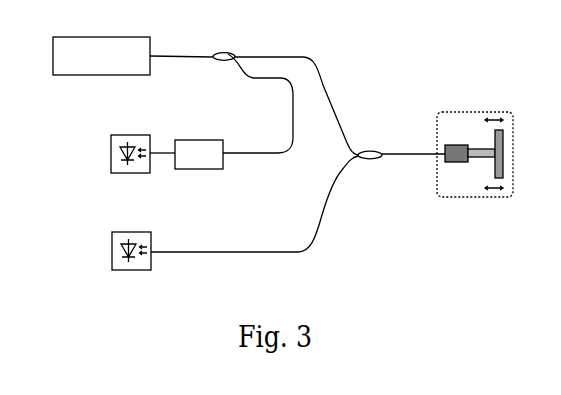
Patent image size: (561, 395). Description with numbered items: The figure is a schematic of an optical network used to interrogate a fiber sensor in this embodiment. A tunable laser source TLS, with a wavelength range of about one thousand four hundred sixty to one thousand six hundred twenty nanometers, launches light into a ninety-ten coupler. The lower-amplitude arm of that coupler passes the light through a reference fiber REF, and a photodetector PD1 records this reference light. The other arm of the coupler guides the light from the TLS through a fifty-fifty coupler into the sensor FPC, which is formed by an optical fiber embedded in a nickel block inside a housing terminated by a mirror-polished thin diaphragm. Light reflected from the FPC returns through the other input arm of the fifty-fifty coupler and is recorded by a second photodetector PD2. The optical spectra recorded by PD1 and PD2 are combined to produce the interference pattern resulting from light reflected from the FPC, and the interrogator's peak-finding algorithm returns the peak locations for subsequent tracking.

The tunable laser source TLS is at (133, 56).
The reference fiber REF is at (186, 154).
The photodetector PD1 is at (115, 154).
The second photodetector PD2 is at (219, 213).
The Fabry-Perot cavity sensor FPC is at (475, 154).